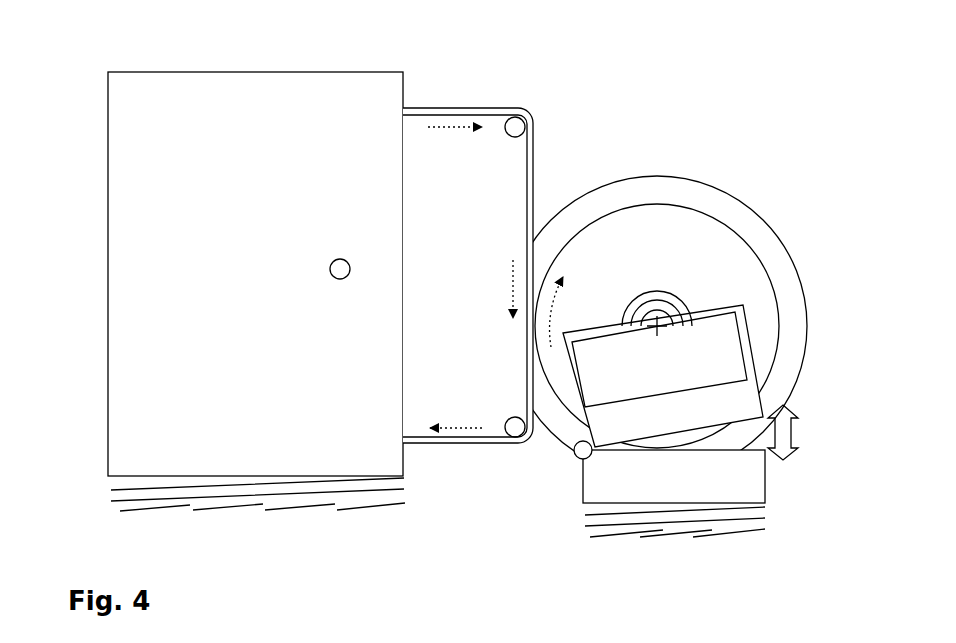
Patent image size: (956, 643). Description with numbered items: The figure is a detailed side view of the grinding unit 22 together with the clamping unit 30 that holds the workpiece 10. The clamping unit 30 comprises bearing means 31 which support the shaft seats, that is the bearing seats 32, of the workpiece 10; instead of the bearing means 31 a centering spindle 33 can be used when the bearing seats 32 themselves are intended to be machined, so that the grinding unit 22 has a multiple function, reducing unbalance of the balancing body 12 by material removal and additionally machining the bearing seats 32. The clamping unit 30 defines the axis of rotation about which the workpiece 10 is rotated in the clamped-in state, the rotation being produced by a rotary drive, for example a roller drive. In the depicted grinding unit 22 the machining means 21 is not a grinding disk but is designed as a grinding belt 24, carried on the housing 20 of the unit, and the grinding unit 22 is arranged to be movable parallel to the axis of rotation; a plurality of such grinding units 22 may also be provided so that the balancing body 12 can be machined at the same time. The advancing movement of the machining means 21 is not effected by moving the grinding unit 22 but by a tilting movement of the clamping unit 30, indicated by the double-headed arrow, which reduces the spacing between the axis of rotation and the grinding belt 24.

The workpiece 10 is at (795, 392).
The balancing body 12 is at (664, 300).
The housing of the conveying device 20 is at (133, 155).
The machining means 21 is at (468, 108).
The grinding unit 22 is at (294, 270).
The grinding belt 24 is at (467, 447).
The clamping unit 30 is at (706, 459).
The bearing means 31 is at (733, 488).
The bearing seats 32 is at (668, 316).
The centering spindle 33 is at (680, 322).